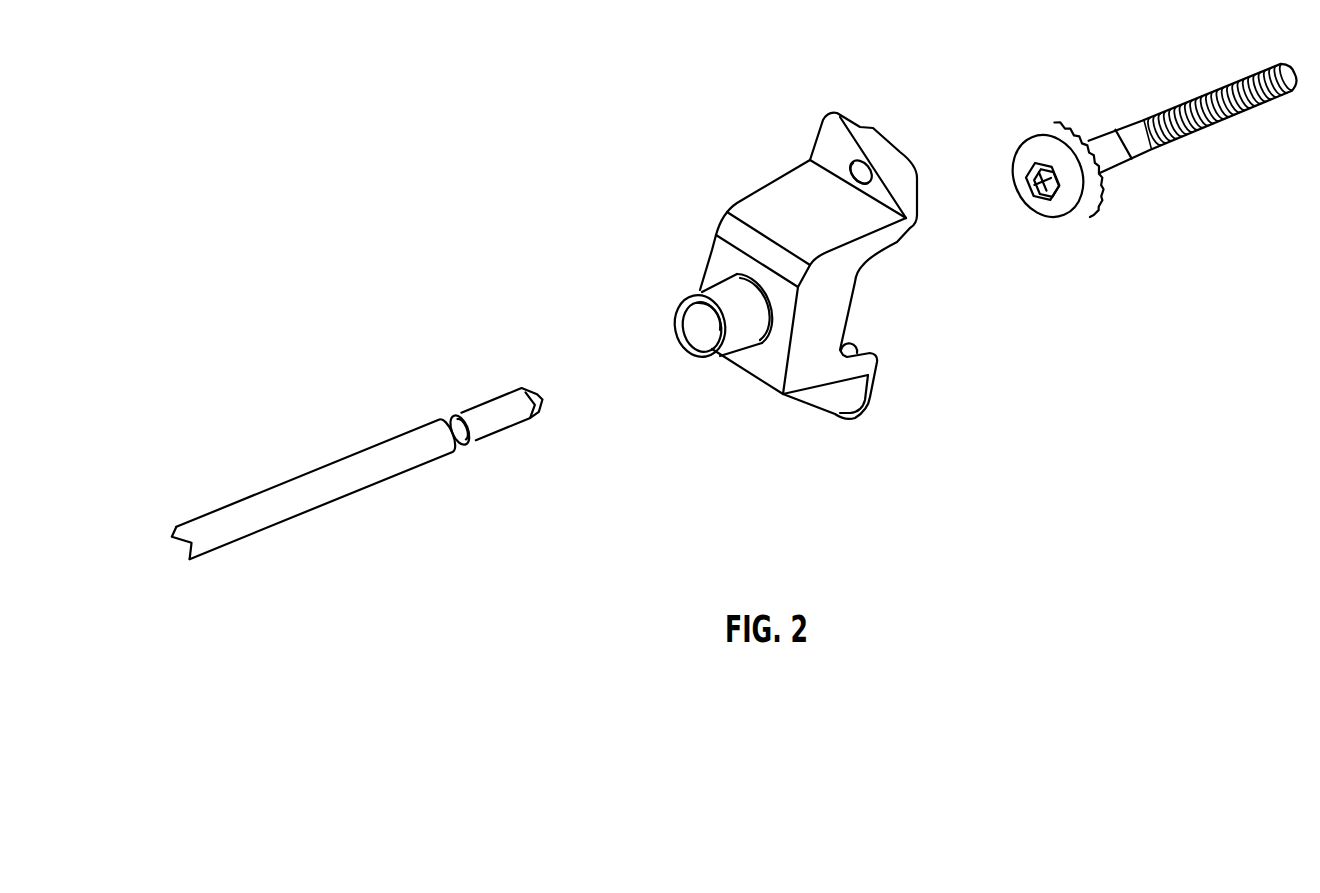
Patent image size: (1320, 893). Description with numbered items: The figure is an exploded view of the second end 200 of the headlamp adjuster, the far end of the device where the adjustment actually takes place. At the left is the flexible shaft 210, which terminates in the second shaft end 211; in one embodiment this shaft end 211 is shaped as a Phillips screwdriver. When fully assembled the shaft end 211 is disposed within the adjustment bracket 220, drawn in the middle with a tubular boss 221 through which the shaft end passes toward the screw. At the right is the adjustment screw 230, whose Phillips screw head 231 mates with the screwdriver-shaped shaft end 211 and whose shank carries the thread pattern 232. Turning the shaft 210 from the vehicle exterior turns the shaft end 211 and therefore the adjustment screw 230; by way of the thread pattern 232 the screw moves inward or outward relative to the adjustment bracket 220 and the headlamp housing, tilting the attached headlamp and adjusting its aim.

The second end 200 is at (331, 227).
The shaft 210 is at (311, 472).
The second shaft end 211 is at (493, 432).
The adjustment bracket 220 is at (766, 200).
The sleeve 221 is at (693, 331).
The adjustment screw 230 is at (1118, 120).
The Phillips screw head 231 is at (1033, 204).
The thread pattern 232 is at (1217, 131).